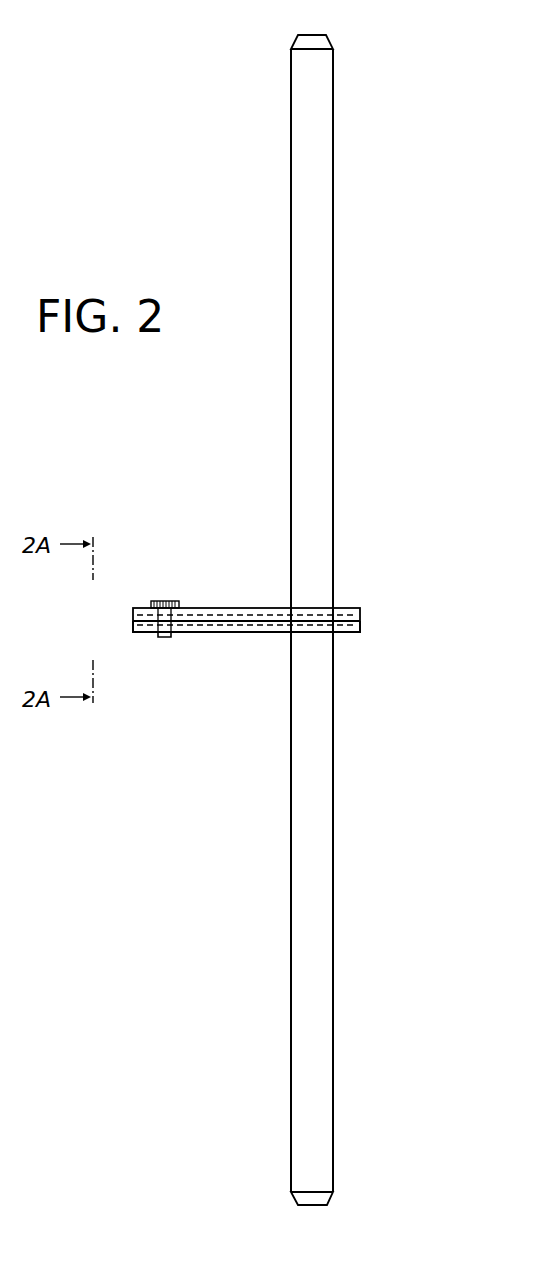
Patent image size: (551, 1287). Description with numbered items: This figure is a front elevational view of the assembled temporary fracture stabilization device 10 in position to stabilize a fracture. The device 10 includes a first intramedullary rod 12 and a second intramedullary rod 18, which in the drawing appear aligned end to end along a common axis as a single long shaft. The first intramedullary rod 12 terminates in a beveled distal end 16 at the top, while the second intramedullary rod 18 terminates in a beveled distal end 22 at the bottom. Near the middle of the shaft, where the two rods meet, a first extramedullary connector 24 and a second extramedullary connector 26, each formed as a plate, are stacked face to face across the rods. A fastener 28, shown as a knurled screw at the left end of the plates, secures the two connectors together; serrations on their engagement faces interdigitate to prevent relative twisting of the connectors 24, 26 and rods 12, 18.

The temporary fracture stabilization device 10 is at (460, 166).
The first intramedullary rod 12 is at (325, 287).
The beveled distal end 16 is at (329, 41).
The second intramedullary rod 18 is at (297, 907).
The beveled distal end 22 is at (293, 1198).
The first extramedullary connector 24 is at (232, 607).
The second extramedullary connector 26 is at (220, 633).
The fastener 28 is at (158, 600).